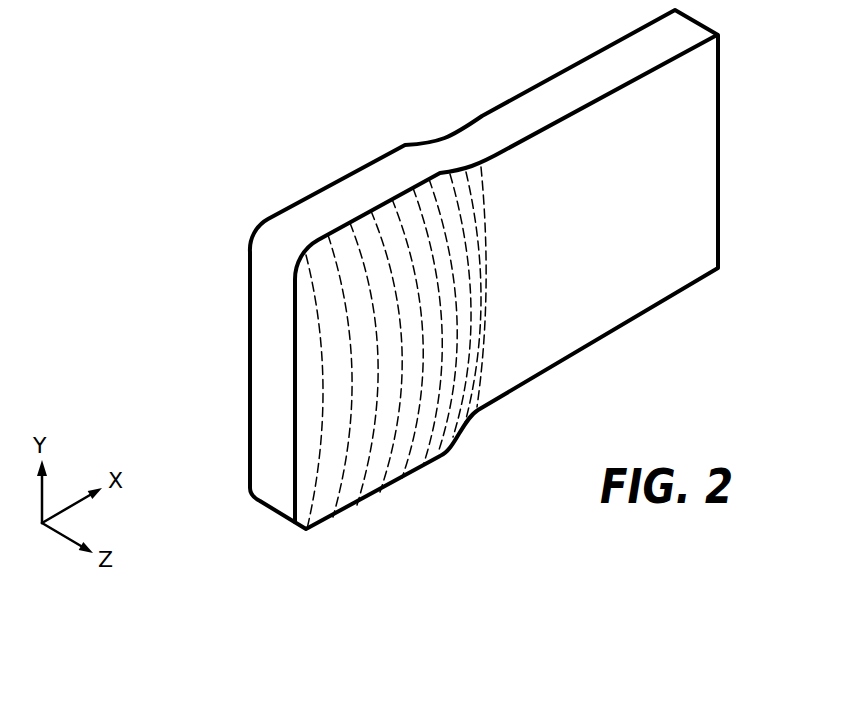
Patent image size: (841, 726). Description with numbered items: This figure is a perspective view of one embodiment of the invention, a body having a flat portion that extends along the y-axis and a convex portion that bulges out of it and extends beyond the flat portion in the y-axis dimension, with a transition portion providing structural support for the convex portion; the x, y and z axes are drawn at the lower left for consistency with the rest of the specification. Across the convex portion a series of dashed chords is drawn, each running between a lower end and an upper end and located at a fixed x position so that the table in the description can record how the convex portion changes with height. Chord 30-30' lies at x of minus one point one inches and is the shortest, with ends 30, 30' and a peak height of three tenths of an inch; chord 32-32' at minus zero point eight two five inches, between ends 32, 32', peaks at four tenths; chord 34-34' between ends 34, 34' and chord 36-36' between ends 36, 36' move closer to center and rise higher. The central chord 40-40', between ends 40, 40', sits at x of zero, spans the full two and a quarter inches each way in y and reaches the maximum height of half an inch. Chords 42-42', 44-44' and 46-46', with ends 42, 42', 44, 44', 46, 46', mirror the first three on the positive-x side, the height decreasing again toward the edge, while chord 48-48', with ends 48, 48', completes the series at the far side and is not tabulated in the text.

The chord end 30 is at (248, 403).
The chord end 32 is at (275, 392).
The chord end 34 is at (307, 368).
The chord end 36 is at (346, 346).
The chord end 40 is at (387, 322).
The chord end 42 is at (430, 302).
The chord end 44 is at (471, 286).
The chord end 46 is at (491, 268).
The ninth cross-section location 48 is at (505, 266).
The chord end 30' is at (248, 376).
The chord end 32' is at (275, 353).
The chord end 34' is at (307, 329).
The chord end 36' is at (341, 309).
The chord end 40' is at (372, 289).
The chord end 42' is at (406, 275).
The chord end 44' is at (437, 267).
The chord end 46' is at (467, 260).
The upper end of ninth cross-section 48' is at (499, 266).